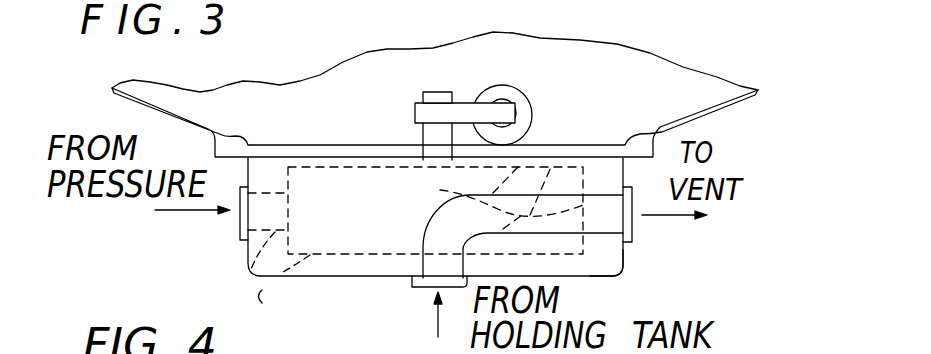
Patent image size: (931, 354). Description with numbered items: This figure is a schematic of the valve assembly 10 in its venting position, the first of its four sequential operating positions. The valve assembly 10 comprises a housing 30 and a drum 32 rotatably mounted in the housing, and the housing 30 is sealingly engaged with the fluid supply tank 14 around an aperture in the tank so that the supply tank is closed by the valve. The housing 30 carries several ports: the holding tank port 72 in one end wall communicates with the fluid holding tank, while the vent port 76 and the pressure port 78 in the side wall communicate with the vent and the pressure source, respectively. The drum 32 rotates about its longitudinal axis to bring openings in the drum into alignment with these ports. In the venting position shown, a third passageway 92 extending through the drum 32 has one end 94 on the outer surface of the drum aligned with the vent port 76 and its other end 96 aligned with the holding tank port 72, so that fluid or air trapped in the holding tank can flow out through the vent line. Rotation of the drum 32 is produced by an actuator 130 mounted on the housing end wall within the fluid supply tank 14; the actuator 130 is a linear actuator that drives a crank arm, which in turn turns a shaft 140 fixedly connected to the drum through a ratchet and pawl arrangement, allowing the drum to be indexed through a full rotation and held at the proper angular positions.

The valve assembly 10 is at (641, 253).
The fluid supply tank 14 is at (729, 105).
The housing 30 is at (642, 282).
The drum 32 is at (280, 278).
The holding tank port 72 is at (457, 287).
The vent port 76 is at (601, 188).
The pressure port 78 is at (250, 270).
The third passageway 92 is at (557, 195).
The one end of third passageway 94 is at (440, 190).
The other end of third passageway 96 is at (413, 293).
The actuator 130 is at (522, 92).
The shaft 140 is at (432, 91).